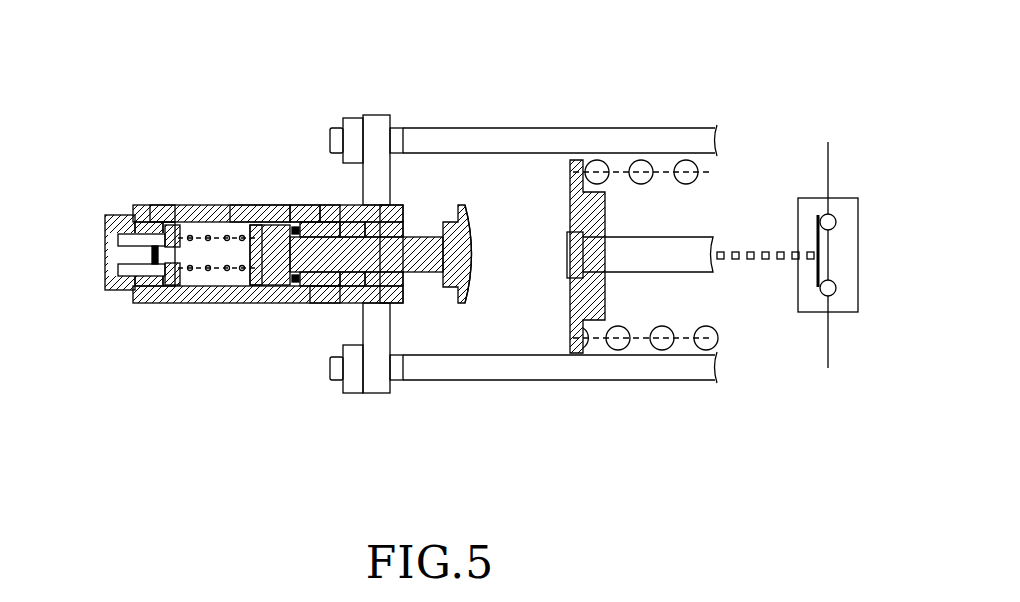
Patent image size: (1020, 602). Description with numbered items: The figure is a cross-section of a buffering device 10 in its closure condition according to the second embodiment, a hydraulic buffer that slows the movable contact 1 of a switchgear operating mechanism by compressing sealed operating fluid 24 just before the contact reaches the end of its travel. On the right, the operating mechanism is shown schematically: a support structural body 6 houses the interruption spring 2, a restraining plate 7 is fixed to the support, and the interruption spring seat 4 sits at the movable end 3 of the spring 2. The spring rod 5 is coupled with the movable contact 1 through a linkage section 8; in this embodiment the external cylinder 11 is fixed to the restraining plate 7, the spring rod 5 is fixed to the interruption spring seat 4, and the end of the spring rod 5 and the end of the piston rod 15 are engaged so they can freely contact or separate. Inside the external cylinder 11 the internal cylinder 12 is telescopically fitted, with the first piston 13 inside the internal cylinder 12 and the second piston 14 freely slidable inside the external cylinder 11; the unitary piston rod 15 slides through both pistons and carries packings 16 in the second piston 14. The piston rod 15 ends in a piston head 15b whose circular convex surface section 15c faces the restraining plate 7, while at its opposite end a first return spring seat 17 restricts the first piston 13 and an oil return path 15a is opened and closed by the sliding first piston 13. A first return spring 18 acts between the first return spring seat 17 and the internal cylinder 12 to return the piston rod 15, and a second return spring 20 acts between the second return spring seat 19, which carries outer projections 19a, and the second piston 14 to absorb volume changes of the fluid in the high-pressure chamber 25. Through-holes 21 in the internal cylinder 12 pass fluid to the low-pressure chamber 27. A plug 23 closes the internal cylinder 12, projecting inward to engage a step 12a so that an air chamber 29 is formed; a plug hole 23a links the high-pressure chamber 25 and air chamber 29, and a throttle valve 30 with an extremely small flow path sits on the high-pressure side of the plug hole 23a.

The movable contact 1 is at (819, 228).
The interruption spring 2 is at (598, 160).
The movable end 3 is at (592, 350).
The interruption spring seat 4 is at (575, 165).
The spring rod 5 is at (690, 237).
The support structural body 6 is at (657, 130).
The restraining plate 7 is at (377, 125).
The linkage section 8 is at (780, 252).
The buffering device 10 is at (276, 27).
The external cylinder 11 is at (205, 205).
The internal cylinder 12 is at (243, 205).
The step 12a is at (160, 215).
The first piston 13 is at (275, 205).
The second piston 14 is at (296, 205).
The piston rod 15 is at (452, 235).
The oil return path 15a is at (232, 303).
The piston head 15b is at (478, 250).
The circular convex surface section 15c is at (478, 300).
The packings 16 is at (311, 205).
The first return spring seat 17 is at (267, 303).
The first return spring 18 is at (328, 207).
The second return spring seat 19 is at (397, 303).
The projections 19a is at (323, 303).
The second return spring 20 is at (210, 303).
The through-holes 21 is at (255, 303).
The plug 23 is at (98, 243).
The plug hole 23a is at (127, 303).
The operating fluid 24 is at (195, 303).
The high-pressure chamber 25 is at (188, 205).
The low-pressure chamber 27 is at (225, 205).
The air chamber 29 is at (133, 200).
The throttle valve 30 is at (160, 303).